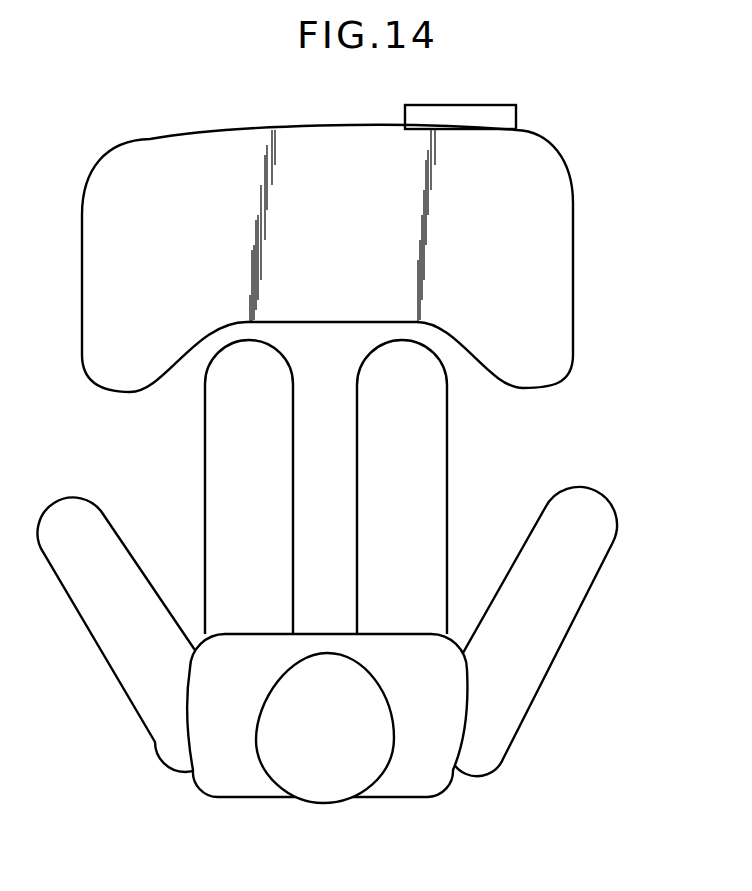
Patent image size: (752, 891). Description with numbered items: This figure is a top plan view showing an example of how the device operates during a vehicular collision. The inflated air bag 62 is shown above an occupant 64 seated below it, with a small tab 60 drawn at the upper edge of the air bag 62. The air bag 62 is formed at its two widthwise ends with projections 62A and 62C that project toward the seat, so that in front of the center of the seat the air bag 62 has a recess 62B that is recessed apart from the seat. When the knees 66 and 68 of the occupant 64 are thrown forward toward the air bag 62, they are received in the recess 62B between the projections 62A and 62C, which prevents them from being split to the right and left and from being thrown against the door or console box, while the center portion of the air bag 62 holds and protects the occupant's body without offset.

The mounting tab 60 is at (523, 123).
The air bag 62 is at (573, 200).
The projection 62A is at (553, 382).
The recess 62B is at (305, 328).
The projection 62C is at (135, 393).
The occupant 64 is at (485, 460).
The knee 66 is at (327, 450).
The knee 68 is at (362, 373).